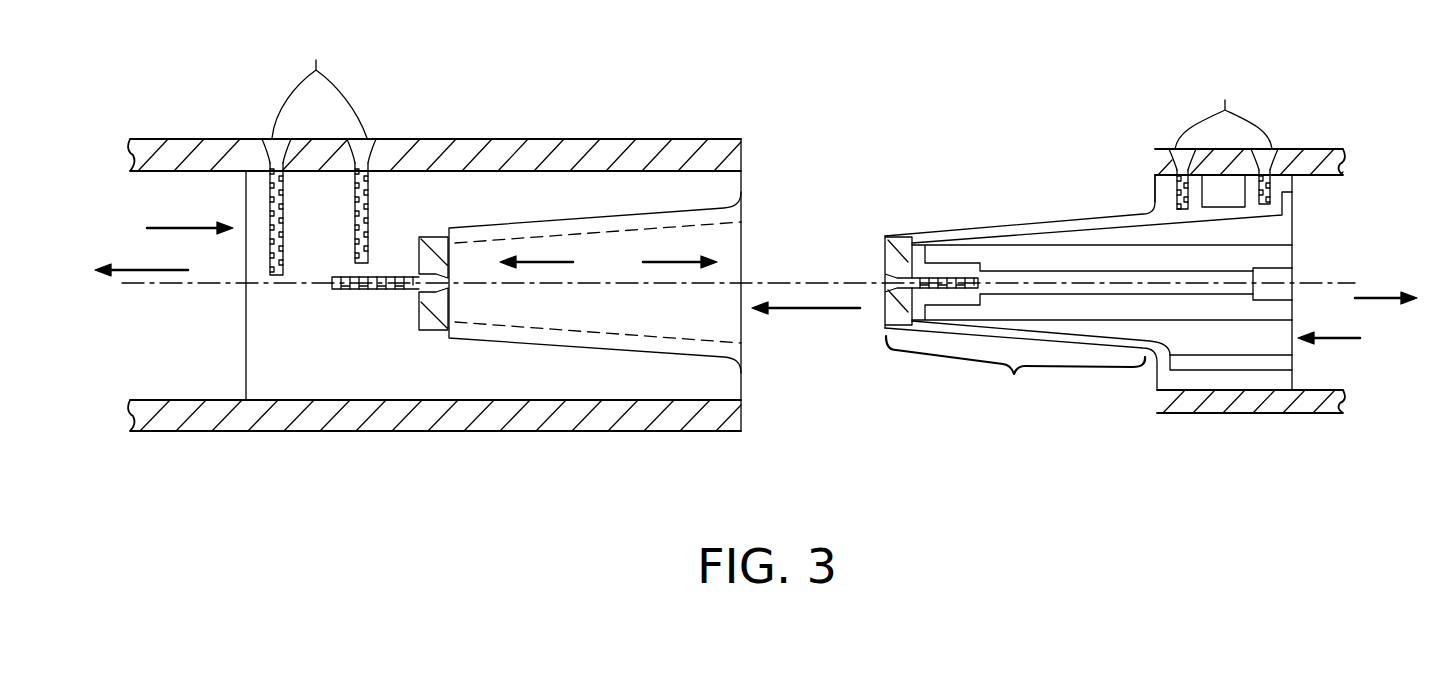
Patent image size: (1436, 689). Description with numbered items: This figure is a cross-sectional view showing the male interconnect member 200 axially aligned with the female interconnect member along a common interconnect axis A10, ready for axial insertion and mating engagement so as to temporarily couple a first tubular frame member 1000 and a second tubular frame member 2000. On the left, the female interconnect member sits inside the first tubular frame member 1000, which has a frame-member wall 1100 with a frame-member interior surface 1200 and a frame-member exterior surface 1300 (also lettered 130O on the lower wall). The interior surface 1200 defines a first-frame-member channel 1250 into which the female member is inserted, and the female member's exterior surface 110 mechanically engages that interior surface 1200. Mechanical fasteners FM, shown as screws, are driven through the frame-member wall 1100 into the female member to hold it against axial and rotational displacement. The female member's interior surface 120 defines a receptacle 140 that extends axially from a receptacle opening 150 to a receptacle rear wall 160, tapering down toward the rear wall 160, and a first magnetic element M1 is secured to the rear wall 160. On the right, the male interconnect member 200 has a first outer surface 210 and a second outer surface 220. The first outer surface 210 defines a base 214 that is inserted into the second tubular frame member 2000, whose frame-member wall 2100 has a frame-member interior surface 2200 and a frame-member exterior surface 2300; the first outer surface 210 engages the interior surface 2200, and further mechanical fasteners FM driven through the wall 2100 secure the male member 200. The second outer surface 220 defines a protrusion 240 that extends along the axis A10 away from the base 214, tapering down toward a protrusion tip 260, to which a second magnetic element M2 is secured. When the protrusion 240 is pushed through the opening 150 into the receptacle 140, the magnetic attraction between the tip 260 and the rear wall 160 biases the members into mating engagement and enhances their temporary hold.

The first tubular frame member 1000 is at (507, 152).
The frame-member wall 1100 is at (218, 140).
The frame-member interior surface 1200 is at (195, 168).
The frame-member exterior surface 1300 is at (413, 138).
The frame-member exterior surface 130O is at (372, 432).
The exterior surface 110 is at (630, 152).
The interior surface 120 is at (640, 335).
The receptacle 140 is at (608, 264).
The receptacle opening 150 is at (745, 244).
The receptacle rear wall 160 is at (417, 308).
The first-frame-member channel 1250 is at (756, 283).
The second tubular frame member 2000 is at (1207, 413).
The male interconnect member 200 is at (1107, 212).
The first outer surface 210 is at (1250, 383).
The base 214 is at (1163, 378).
The second outer surface 220 is at (977, 228).
The protrusion 240 is at (1015, 374).
The protrusion tip 260 is at (885, 327).
The frame-member wall 2100 is at (1160, 148).
The frame-member interior surface 2200 is at (1312, 178).
The frame-member exterior surface 2300 is at (1293, 148).
The mechanical fasteners FM is at (319, 87).
The first magnetic element M1 is at (438, 237).
The second magnetic element M2 is at (903, 243).
The interconnect axis A10 is at (1357, 262).